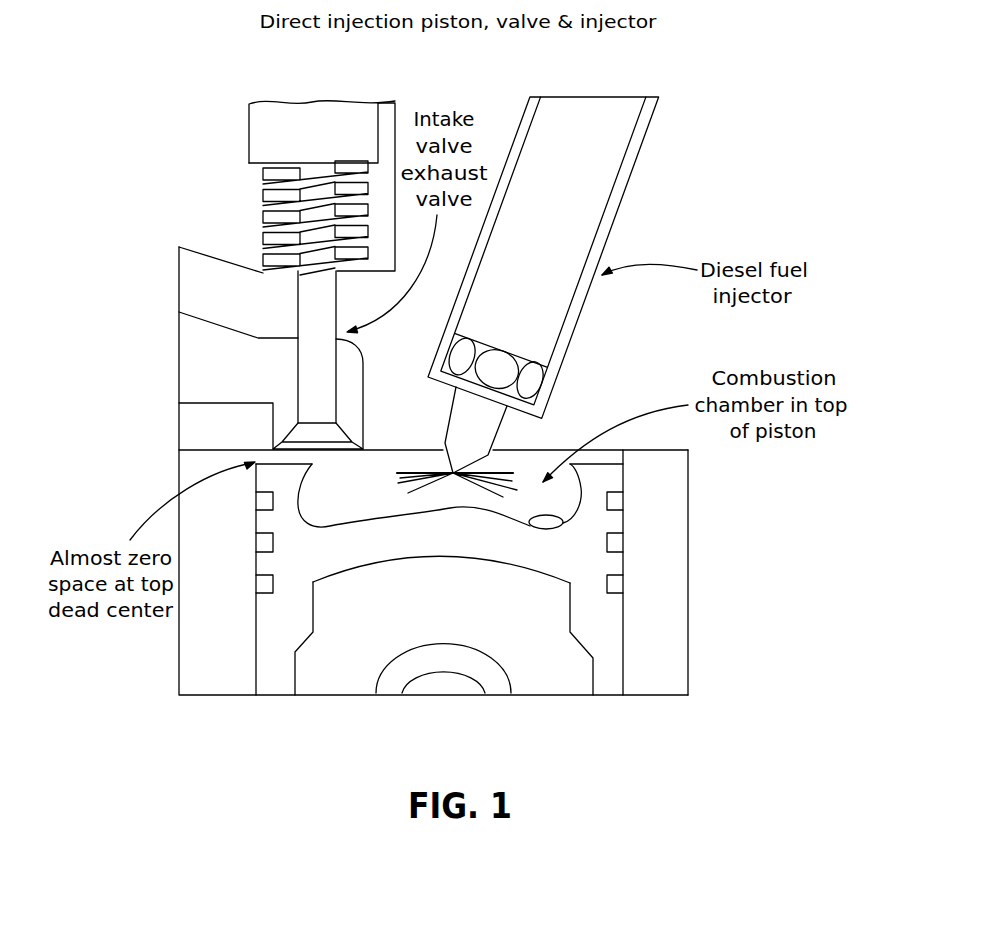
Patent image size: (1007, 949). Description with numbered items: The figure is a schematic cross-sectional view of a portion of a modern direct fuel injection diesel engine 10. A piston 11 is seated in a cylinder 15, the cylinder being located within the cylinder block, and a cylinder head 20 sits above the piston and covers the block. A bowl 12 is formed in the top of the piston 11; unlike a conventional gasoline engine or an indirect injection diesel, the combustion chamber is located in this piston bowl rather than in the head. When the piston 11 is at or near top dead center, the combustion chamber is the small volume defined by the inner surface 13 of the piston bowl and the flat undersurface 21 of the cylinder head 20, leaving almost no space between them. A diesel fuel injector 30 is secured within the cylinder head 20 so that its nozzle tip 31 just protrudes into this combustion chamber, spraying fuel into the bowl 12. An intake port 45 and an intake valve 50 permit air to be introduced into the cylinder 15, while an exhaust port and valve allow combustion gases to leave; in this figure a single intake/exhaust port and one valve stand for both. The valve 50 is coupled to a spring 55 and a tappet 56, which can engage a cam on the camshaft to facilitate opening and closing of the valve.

The engine 10 is at (102, 282).
The piston 11 is at (272, 673).
The bowl 12 is at (567, 497).
The inner surface of the piston bowl 13 is at (563, 525).
The cylinder 15 is at (672, 655).
The cylinder head 20 is at (179, 428).
The flat undersurface of the cylinder head 21 is at (413, 452).
The diesel fuel injector 30 is at (580, 321).
The nozzle tip 31 is at (455, 473).
The intake port 45 is at (179, 348).
The intake valve 50 is at (290, 437).
The spring 55 is at (263, 223).
The tappet 56 is at (249, 131).